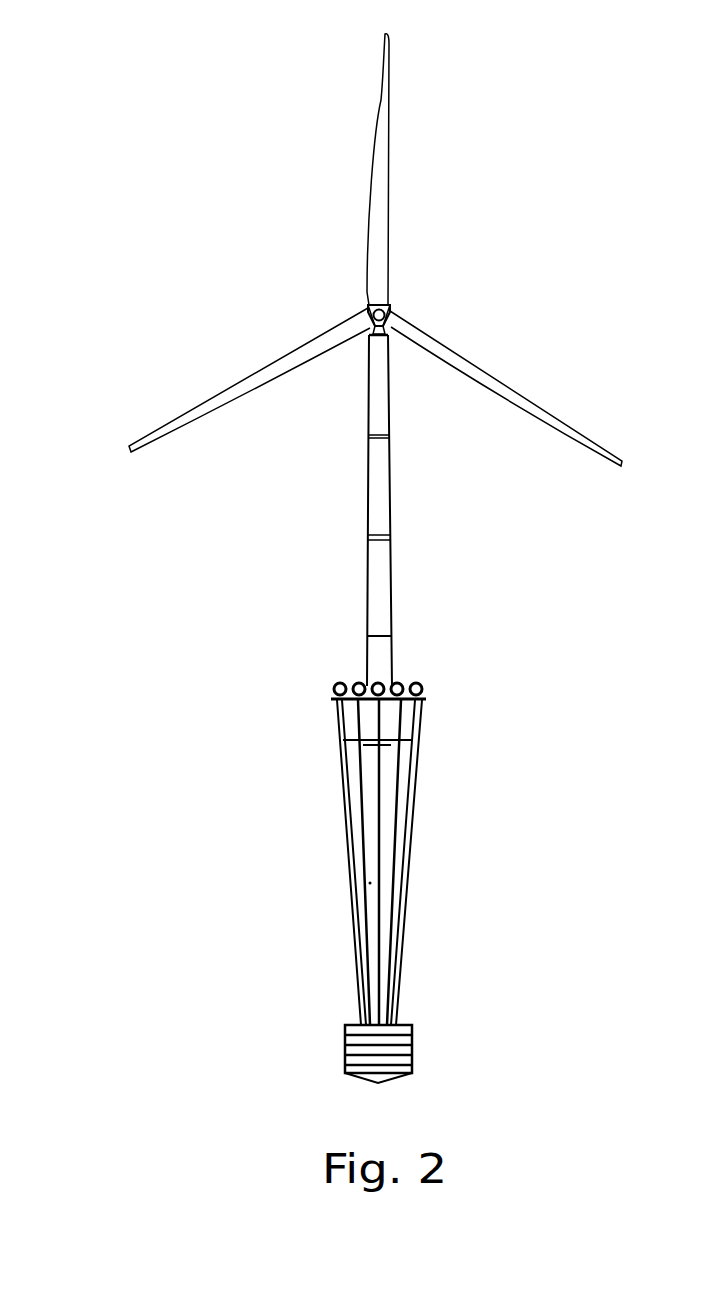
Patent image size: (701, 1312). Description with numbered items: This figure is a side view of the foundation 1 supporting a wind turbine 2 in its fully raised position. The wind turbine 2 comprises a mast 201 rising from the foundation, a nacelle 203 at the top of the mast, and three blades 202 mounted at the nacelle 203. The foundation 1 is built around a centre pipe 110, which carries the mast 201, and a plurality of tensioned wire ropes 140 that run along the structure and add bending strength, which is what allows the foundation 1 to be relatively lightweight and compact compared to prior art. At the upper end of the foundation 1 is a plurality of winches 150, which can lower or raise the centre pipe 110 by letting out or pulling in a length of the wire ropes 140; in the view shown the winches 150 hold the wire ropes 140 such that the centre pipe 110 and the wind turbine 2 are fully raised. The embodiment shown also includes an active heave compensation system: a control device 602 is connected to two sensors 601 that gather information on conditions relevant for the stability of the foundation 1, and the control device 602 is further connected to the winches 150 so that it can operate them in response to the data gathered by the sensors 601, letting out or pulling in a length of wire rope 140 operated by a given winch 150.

The foundation 1 is at (158, 650).
The wind turbine 2 is at (147, 122).
The mast 201 is at (367, 485).
The blades 202 is at (272, 363).
The nacelle 203 is at (372, 305).
The centre pipe 110 is at (393, 840).
The tensioned wire ropes 140 is at (347, 847).
The winches 150 is at (427, 688).
The sensors 601 is at (343, 703).
The control device 602 is at (397, 682).